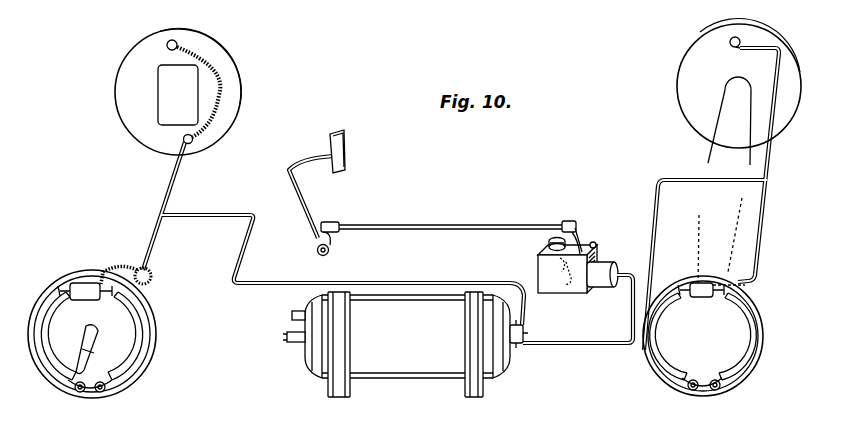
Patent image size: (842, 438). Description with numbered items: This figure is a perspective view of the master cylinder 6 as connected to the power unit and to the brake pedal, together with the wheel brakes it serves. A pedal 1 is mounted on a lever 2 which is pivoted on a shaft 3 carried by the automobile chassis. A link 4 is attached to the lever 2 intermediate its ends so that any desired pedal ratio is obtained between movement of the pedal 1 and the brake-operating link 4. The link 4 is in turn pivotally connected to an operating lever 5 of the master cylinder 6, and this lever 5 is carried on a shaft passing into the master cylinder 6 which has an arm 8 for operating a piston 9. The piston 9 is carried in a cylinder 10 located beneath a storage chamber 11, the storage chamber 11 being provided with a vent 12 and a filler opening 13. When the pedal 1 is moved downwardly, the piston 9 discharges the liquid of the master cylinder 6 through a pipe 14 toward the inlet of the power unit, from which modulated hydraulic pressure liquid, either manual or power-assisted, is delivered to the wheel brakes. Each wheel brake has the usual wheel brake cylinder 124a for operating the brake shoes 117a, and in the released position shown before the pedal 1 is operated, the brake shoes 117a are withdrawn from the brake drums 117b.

The pedal 1 is at (349, 162).
The lever 2 is at (313, 207).
The shaft 3 is at (336, 254).
The link 4 is at (450, 226).
The operating lever 5 is at (588, 236).
The master cylinder 6 is at (554, 272).
The arm 8 is at (540, 283).
The piston 9 is at (548, 268).
The cylinder 10 is at (604, 266).
The storage chamber 11 is at (542, 268).
The vent 12 is at (595, 246).
The filler opening 13 is at (552, 248).
The pipe 14 is at (627, 313).
The brake shoes 117a is at (664, 340).
The brake drums 117b is at (656, 372).
The wheel brake cylinder 124a is at (702, 302).